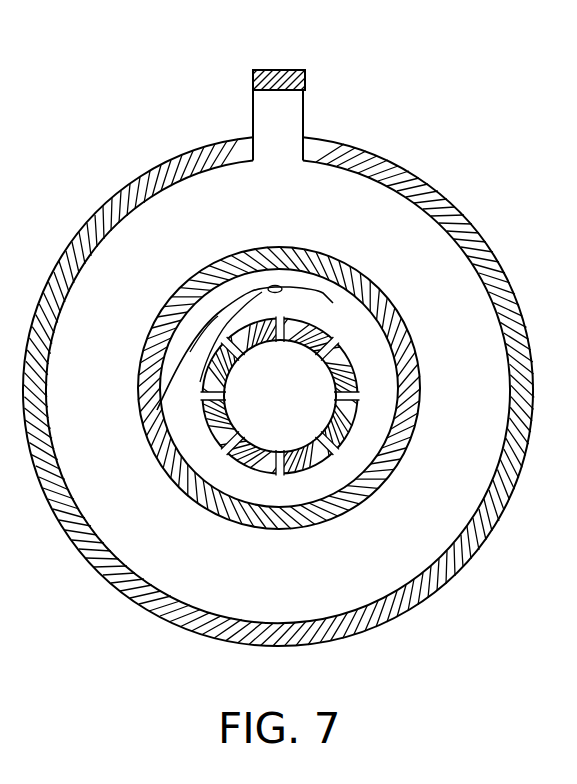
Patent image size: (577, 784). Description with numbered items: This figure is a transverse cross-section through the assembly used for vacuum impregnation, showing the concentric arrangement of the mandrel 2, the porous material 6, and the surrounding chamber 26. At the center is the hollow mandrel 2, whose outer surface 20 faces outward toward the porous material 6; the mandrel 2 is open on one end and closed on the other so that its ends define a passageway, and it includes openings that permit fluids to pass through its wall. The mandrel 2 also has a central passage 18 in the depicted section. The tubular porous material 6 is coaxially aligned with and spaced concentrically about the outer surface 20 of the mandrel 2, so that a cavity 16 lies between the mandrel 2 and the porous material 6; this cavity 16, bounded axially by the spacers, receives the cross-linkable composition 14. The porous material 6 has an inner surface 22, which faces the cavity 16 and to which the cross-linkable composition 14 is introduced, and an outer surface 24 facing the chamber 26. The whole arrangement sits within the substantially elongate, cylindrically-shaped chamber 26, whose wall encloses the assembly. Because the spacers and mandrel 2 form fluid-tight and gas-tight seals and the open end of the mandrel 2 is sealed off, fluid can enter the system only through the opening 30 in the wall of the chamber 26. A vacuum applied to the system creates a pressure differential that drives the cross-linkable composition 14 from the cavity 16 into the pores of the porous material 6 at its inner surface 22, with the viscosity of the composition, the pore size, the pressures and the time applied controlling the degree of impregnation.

The mandrel 2 is at (355, 408).
The porous material 6 is at (330, 250).
The cross-linkable composition 14 is at (263, 282).
The cavity 16 is at (375, 337).
The central bore 18 is at (250, 442).
The outer surface of mandrel 20 is at (357, 372).
The inner surface of porous material 22 is at (338, 494).
The outer surface of porous material 24 is at (367, 503).
The chamber 26 is at (470, 217).
The opening of chamber 30 is at (305, 70).